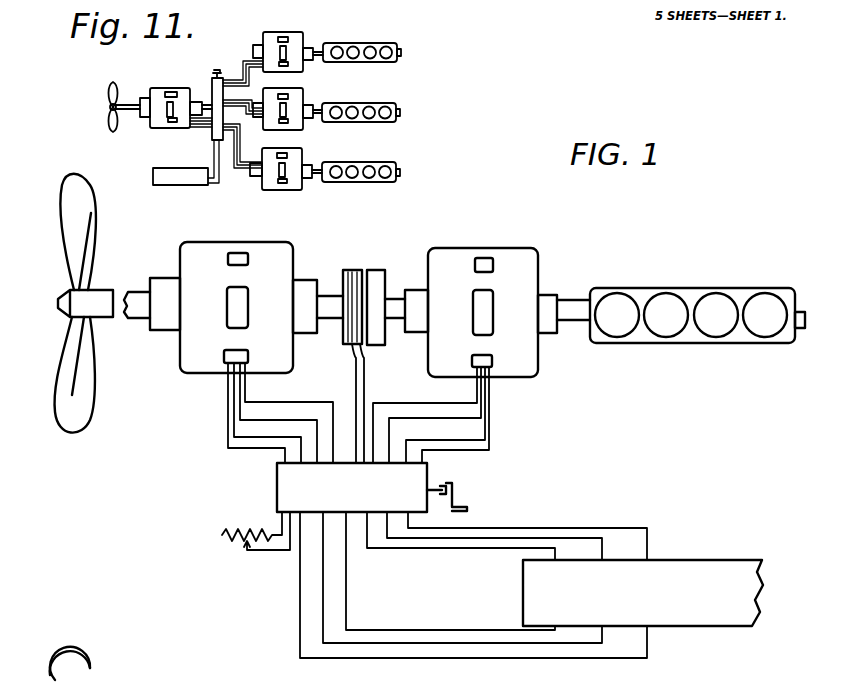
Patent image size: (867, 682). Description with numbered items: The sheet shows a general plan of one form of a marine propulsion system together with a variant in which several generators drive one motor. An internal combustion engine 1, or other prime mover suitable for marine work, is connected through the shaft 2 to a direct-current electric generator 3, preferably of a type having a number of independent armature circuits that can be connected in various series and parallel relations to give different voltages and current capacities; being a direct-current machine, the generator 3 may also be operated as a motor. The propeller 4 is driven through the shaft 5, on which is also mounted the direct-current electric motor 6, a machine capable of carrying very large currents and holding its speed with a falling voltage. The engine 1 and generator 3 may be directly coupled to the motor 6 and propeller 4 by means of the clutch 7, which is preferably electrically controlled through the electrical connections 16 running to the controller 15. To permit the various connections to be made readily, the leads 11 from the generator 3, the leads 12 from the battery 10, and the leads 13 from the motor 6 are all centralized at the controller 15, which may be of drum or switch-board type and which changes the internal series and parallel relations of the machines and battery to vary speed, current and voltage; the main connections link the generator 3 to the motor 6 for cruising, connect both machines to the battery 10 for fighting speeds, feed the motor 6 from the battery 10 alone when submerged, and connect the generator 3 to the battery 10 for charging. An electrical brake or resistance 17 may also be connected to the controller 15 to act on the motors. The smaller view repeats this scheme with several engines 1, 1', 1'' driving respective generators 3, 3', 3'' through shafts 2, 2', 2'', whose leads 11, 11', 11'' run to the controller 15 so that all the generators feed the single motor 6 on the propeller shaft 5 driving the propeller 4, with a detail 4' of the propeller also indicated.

In FIG. 1, the internal combustion engine 1 is at (697, 298).
In FIG. 11, the internal combustion engine 1 is at (367, 44).
In FIG. 11, the second internal combustion engine 1' is at (370, 102).
In FIG. 11, the third internal combustion engine 1'' is at (379, 158).
In FIG. 1, the shaft 2 is at (577, 290).
In FIG. 11, the shaft 2 is at (332, 39).
In FIG. 11, the second engine shaft 2' is at (333, 91).
In FIG. 11, the third engine shaft 2'' is at (327, 152).
In FIG. 1, the D. C. electric generator 3 is at (481, 294).
In FIG. 11, the D. C. electric generator 3 is at (289, 43).
In FIG. 11, the second generator 3' is at (287, 100).
In FIG. 11, the third generator 3'' is at (289, 181).
In FIG. 1, the propeller 4 is at (89, 303).
In FIG. 11, the propeller 4 is at (94, 107).
In FIG. 1, the propeller hub (alternate) 4' is at (89, 663).
In FIG. 1, the shaft 5 is at (140, 297).
In FIG. 11, the shaft 5 is at (134, 112).
In FIG. 1, the D. C. electric motor 6 is at (285, 258).
In FIG. 11, the D. C. electric motor 6 is at (178, 92).
In FIG. 1, the clutch 7 is at (362, 270).
In FIG. 1, the battery 10 is at (705, 568).
In FIG. 11, the battery 10 is at (175, 185).
In FIG. 1, the leads 11 is at (459, 415).
In FIG. 11, the leads 11 is at (243, 49).
In FIG. 11, the second generator conductors 11' is at (248, 94).
In FIG. 11, the third generator conductors 11'' is at (242, 167).
In FIG. 1, the leads 12 is at (497, 540).
In FIG. 11, the leads 12 is at (215, 192).
In FIG. 1, the leads 13 is at (227, 425).
In FIG. 11, the leads 13 is at (200, 130).
In FIG. 1, the controller 15 is at (423, 475).
In FIG. 11, the controller 15 is at (210, 85).
In FIG. 1, the electrical connections 16 is at (358, 377).
In FIG. 1, the electrical brake or resistance 17 is at (232, 547).